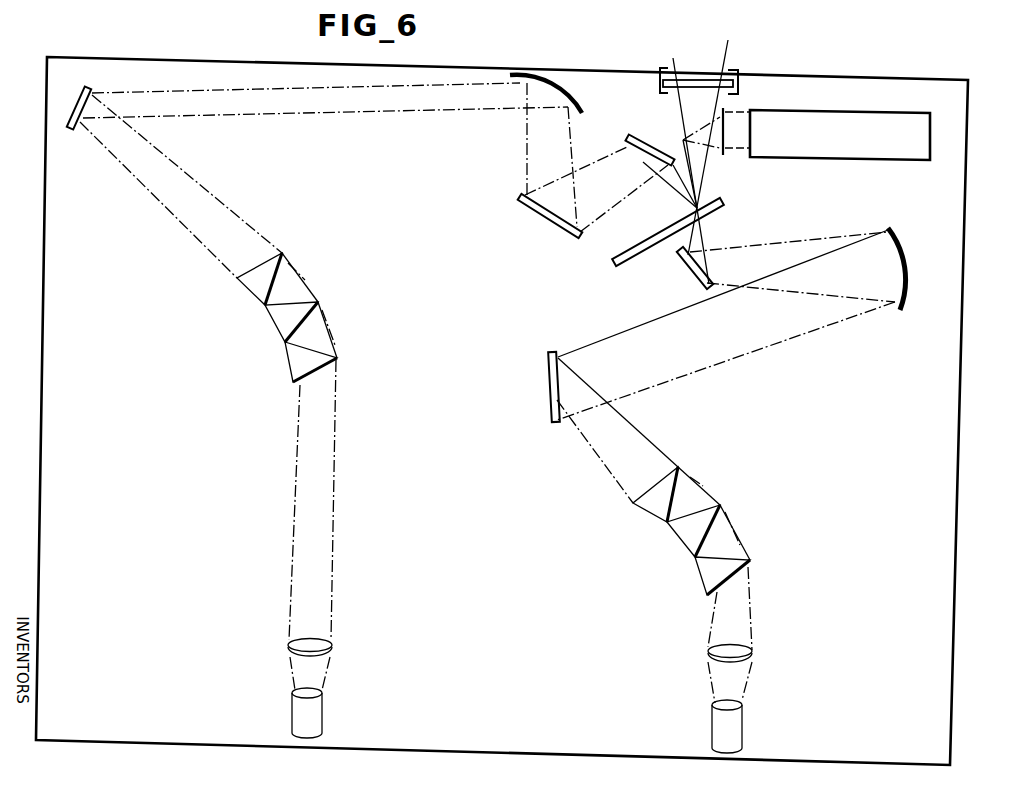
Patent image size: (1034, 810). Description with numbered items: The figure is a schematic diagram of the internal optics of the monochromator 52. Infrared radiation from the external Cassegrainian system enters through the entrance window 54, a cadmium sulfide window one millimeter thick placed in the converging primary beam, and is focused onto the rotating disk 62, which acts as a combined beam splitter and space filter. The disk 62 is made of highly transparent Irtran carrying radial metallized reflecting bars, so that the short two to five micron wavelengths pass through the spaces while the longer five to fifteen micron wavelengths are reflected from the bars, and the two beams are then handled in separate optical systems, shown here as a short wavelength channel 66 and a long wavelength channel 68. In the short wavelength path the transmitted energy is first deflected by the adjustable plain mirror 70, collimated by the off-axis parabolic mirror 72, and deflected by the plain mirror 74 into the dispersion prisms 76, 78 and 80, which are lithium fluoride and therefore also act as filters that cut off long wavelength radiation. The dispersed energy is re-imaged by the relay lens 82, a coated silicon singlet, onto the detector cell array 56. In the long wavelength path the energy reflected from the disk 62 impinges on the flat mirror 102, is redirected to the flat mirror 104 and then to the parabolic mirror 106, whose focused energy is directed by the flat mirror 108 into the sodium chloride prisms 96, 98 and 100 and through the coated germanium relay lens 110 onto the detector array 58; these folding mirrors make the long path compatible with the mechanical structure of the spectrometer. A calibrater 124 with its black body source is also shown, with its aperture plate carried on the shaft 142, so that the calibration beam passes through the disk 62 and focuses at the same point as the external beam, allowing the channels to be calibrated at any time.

The monochromator 52 is at (968, 424).
The entrance window 54 is at (694, 77).
The detector cell array 56 is at (742, 731).
The detector array 58 is at (292, 667).
The disk 62 is at (615, 258).
The first optical channel 66 is at (745, 438).
The second optical channel 68 is at (228, 393).
The plain mirror 70 is at (697, 289).
The parabolic mirror 72 is at (903, 257).
The plain mirror 74 is at (549, 388).
The dispersion prism 76 is at (685, 468).
The dispersion prism 78 is at (722, 510).
The dispersion prism 80 is at (752, 562).
The relay lens 82 is at (745, 653).
The prism 96 is at (296, 277).
The prism 98 is at (320, 311).
The prism 100 is at (330, 368).
The flat mirror 102 is at (634, 134).
The flat mirror 104 is at (520, 200).
The parabolic mirror 106 is at (548, 86).
The flat mirror 108 is at (72, 107).
The relay lens 110 is at (330, 648).
The calibrater 124 is at (862, 164).
The shaft 142 is at (725, 155).